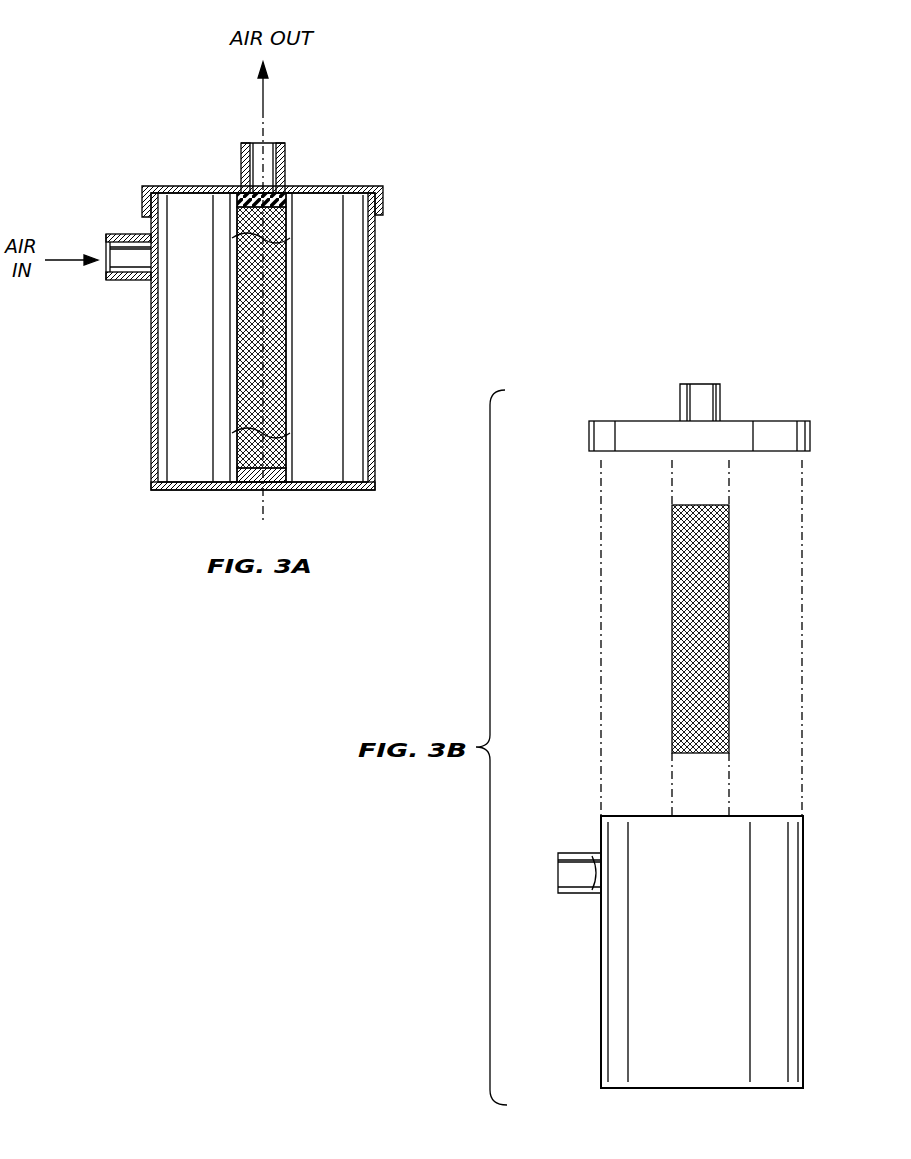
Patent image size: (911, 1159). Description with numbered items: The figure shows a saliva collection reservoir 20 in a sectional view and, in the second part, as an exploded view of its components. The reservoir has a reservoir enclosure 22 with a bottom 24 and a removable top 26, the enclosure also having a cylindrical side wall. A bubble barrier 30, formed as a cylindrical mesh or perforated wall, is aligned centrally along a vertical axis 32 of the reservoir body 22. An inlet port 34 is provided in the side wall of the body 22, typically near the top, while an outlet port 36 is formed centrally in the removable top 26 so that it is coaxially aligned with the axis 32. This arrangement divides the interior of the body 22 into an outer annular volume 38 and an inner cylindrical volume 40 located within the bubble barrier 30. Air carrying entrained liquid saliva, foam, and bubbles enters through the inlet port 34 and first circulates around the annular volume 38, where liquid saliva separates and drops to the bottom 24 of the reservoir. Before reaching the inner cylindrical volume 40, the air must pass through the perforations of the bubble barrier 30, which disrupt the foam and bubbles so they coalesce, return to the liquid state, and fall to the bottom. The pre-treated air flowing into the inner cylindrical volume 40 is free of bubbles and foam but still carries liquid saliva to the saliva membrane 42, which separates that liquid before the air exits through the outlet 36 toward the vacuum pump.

In FIG. 3A, the saliva collection reservoir 20 is at (122, 94).
In FIG. 3A, the reservoir enclosure 22 is at (388, 250).
In FIG. 3B, the reservoir enclosure 22 is at (790, 886).
In FIG. 3A, the bottom 24 is at (150, 412).
In FIG. 3A, the removable top 26 is at (346, 186).
In FIG. 3B, the removable top 26 is at (767, 420).
In FIG. 3A, the bubble barrier 30 is at (230, 378).
In FIG. 3B, the bubble barrier 30 is at (732, 620).
In FIG. 3A, the vertical axis 32 is at (263, 121).
In FIG. 3A, the inlet port 34 is at (125, 282).
In FIG. 3B, the inlet port 34 is at (570, 876).
In FIG. 3A, the outlet port 36 is at (285, 155).
In FIG. 3B, the outlet port 36 is at (680, 400).
In FIG. 3A, the annular volume 38 is at (202, 319).
In FIG. 3A, the inner cylindrical volume 40 is at (236, 418).
In FIG. 3A, the saliva membrane 42 is at (238, 198).